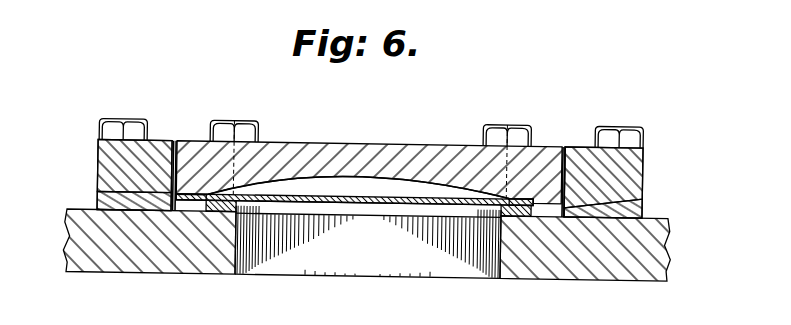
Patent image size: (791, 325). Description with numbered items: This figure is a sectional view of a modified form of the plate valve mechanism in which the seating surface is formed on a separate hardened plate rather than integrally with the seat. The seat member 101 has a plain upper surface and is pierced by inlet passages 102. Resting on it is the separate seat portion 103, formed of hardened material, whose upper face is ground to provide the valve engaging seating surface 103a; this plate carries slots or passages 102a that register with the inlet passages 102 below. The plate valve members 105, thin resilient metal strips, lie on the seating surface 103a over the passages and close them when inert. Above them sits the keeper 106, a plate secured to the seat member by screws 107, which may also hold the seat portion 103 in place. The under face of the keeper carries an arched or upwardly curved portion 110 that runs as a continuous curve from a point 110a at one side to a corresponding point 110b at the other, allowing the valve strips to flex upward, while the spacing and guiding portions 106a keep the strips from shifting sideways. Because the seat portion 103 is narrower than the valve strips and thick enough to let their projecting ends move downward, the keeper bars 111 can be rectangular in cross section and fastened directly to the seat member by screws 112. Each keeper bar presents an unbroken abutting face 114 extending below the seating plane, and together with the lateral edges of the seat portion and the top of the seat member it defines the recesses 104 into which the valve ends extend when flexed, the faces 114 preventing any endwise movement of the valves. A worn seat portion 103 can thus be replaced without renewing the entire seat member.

The seat member 101 is at (82, 229).
The inlet passages 102 is at (388, 296).
The slots or passages 102a is at (368, 236).
The separate seat portion 103 is at (224, 199).
The valve engaging seating surface 103a is at (216, 209).
The recesses 104 is at (181, 206).
The plate valve members 105 is at (450, 230).
The keeper 106 is at (363, 134).
The spacing and guiding portions 106a is at (232, 186).
The screws 107 is at (278, 113).
The arched or upwardly curved portion 110 is at (370, 192).
The end point of curved face 110a is at (203, 192).
The end point of curved face 110b is at (533, 192).
The keeper bars 111 is at (105, 146).
The screws 112 is at (133, 110).
The abutting face 114 is at (100, 189).